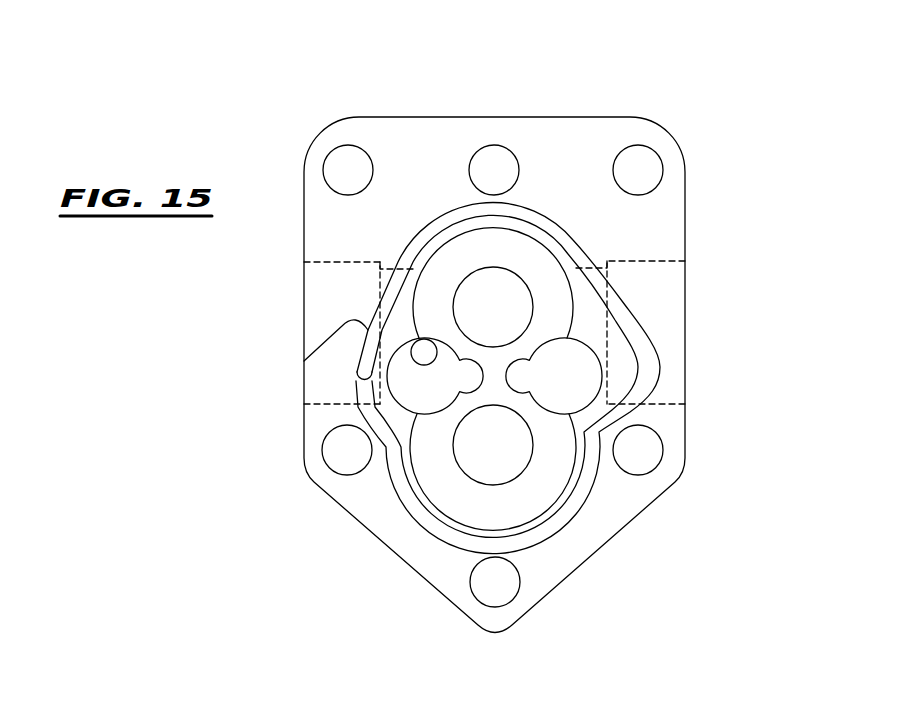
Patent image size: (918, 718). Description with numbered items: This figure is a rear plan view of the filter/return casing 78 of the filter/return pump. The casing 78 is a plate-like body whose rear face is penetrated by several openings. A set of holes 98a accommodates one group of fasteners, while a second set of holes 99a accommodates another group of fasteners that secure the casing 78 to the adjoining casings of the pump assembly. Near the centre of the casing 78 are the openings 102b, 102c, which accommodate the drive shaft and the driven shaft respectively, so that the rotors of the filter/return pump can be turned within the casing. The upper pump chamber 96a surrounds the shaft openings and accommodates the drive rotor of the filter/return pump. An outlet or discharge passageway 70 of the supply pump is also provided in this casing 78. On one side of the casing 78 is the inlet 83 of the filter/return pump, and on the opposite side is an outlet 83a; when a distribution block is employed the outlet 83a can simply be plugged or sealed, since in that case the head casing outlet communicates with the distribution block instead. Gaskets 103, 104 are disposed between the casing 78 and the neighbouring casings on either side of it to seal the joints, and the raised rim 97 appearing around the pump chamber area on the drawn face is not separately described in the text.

The filter/return casing 78 is at (580, 117).
The holes 98a is at (349, 150).
The holes 99a is at (482, 150).
The outlet 83a is at (332, 262).
The inlet 83 is at (638, 261).
The raised sealing rim 97 is at (549, 505).
The gasket 103 is at (357, 370).
The gasket 104 is at (304, 361).
The upper pump chamber 96a is at (426, 286).
The opening 102b is at (467, 282).
The opening 102c is at (485, 478).
The discharge passageway 70 is at (425, 364).